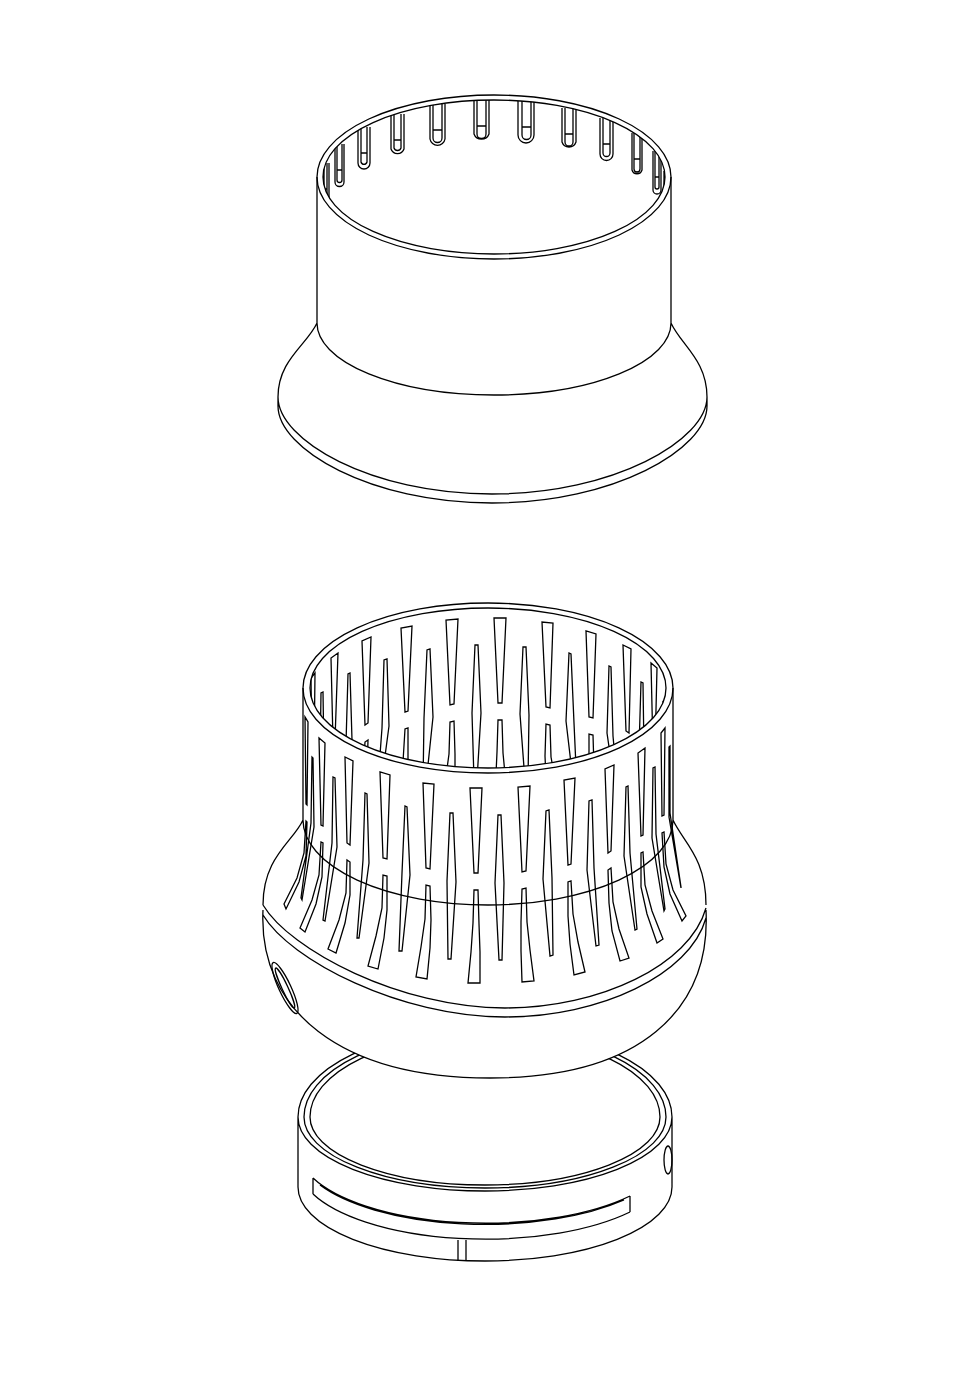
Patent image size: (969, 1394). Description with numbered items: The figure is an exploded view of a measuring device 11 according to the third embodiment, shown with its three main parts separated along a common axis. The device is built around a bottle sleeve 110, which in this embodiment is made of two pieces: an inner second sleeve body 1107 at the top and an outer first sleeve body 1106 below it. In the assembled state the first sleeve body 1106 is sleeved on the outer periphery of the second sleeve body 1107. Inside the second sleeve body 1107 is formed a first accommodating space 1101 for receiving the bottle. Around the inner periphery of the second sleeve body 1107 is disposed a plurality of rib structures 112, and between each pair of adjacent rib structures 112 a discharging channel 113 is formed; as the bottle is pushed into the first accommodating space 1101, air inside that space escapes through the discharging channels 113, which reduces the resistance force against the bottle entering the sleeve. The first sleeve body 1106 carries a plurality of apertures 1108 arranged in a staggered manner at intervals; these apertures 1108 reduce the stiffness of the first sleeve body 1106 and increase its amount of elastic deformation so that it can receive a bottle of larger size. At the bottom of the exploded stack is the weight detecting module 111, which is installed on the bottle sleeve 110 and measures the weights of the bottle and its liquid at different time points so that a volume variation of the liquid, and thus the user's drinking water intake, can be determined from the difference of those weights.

The measuring device 11 is at (180, 106).
The bottle sleeve 110 is at (762, 254).
The second sleeve body 1107 is at (652, 302).
The first accommodating space 1101 is at (392, 183).
The rib structures 112 is at (594, 74).
The discharging channel 113 is at (504, 118).
The first sleeve body 1106 is at (641, 650).
The apertures 1108 is at (645, 748).
The weight detecting module 111 is at (628, 1100).